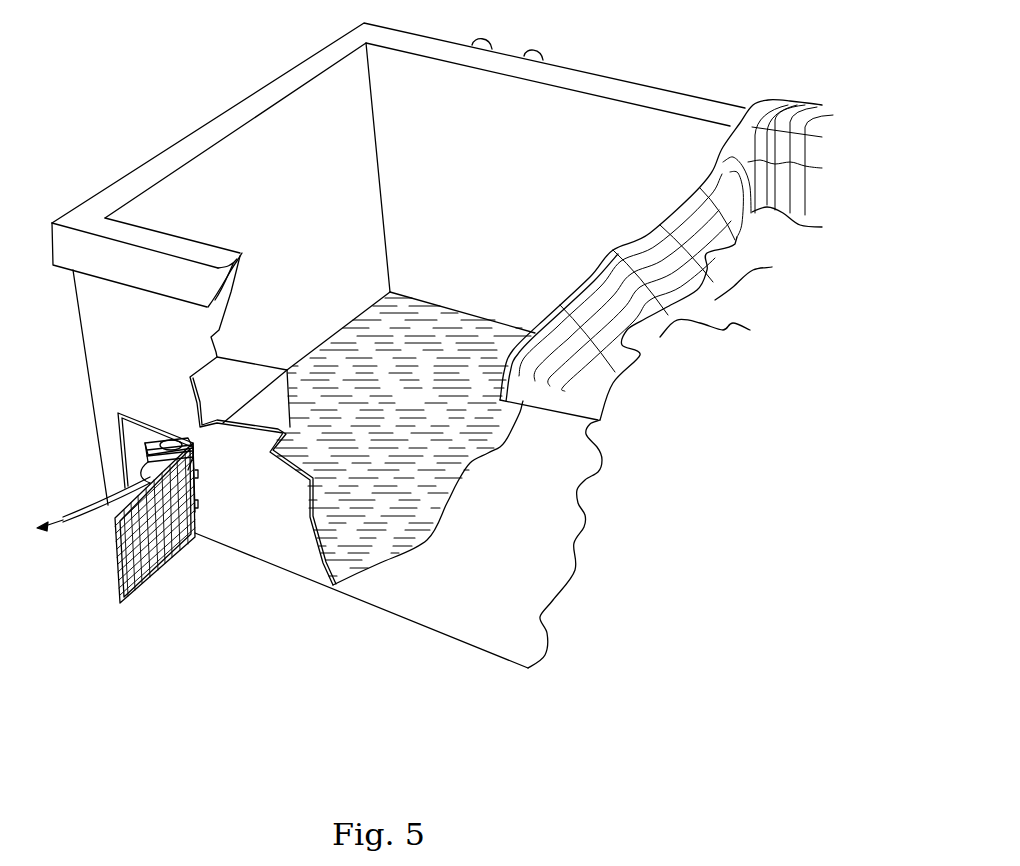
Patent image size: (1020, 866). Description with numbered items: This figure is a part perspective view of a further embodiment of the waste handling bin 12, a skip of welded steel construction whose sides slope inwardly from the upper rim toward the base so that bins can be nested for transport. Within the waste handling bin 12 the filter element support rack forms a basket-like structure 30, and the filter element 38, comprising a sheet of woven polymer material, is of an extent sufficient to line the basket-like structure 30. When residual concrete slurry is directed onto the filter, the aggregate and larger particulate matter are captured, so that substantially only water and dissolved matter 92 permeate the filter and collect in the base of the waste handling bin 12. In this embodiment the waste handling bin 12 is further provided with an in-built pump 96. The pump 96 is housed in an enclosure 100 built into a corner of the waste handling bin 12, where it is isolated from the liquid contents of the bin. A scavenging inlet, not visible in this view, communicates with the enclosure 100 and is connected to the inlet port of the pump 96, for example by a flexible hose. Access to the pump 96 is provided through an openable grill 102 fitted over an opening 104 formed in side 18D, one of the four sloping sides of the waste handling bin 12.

The waste handling bin 12 is at (201, 115).
The side 18D is at (557, 553).
The basket-like structure 30 is at (767, 313).
The filter element 38 is at (637, 240).
The water and dissolved matter 92 is at (440, 395).
The in-built pump 96 is at (145, 461).
The enclosure 100 is at (255, 378).
The openable grill 102 is at (143, 582).
The opening 104 is at (130, 470).